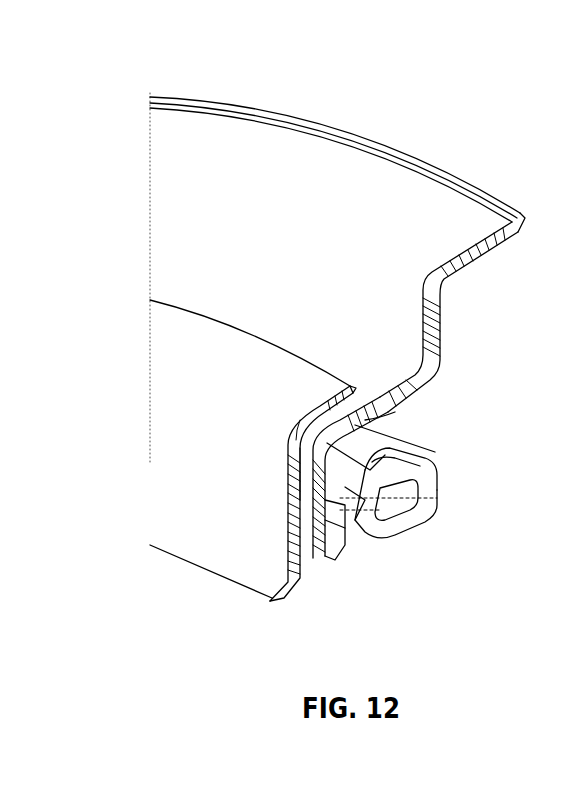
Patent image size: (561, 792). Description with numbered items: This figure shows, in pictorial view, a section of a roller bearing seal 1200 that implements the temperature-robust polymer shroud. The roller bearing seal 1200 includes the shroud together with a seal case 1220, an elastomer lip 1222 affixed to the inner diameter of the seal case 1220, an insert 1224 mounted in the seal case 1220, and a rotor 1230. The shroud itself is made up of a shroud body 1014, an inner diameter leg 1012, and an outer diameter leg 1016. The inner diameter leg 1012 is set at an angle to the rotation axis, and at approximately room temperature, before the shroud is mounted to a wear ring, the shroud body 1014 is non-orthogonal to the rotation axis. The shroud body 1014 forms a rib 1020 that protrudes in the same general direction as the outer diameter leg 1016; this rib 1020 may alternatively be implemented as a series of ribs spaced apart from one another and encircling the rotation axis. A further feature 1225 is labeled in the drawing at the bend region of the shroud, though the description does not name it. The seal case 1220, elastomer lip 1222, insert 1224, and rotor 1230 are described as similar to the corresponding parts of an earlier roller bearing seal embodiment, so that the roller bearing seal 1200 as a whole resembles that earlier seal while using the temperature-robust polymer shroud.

The roller bearing seal 1200 is at (108, 76).
The seal case 1220 is at (461, 218).
The bend 1225 is at (312, 404).
The outer diameter leg 1016 is at (398, 411).
The insert 1224 is at (400, 455).
The shroud body 1014 is at (288, 474).
The rib 1020 is at (290, 505).
The rotor 1230 is at (415, 528).
The elastomer lip 1222 is at (335, 556).
The inner diameter leg 1012 is at (290, 577).